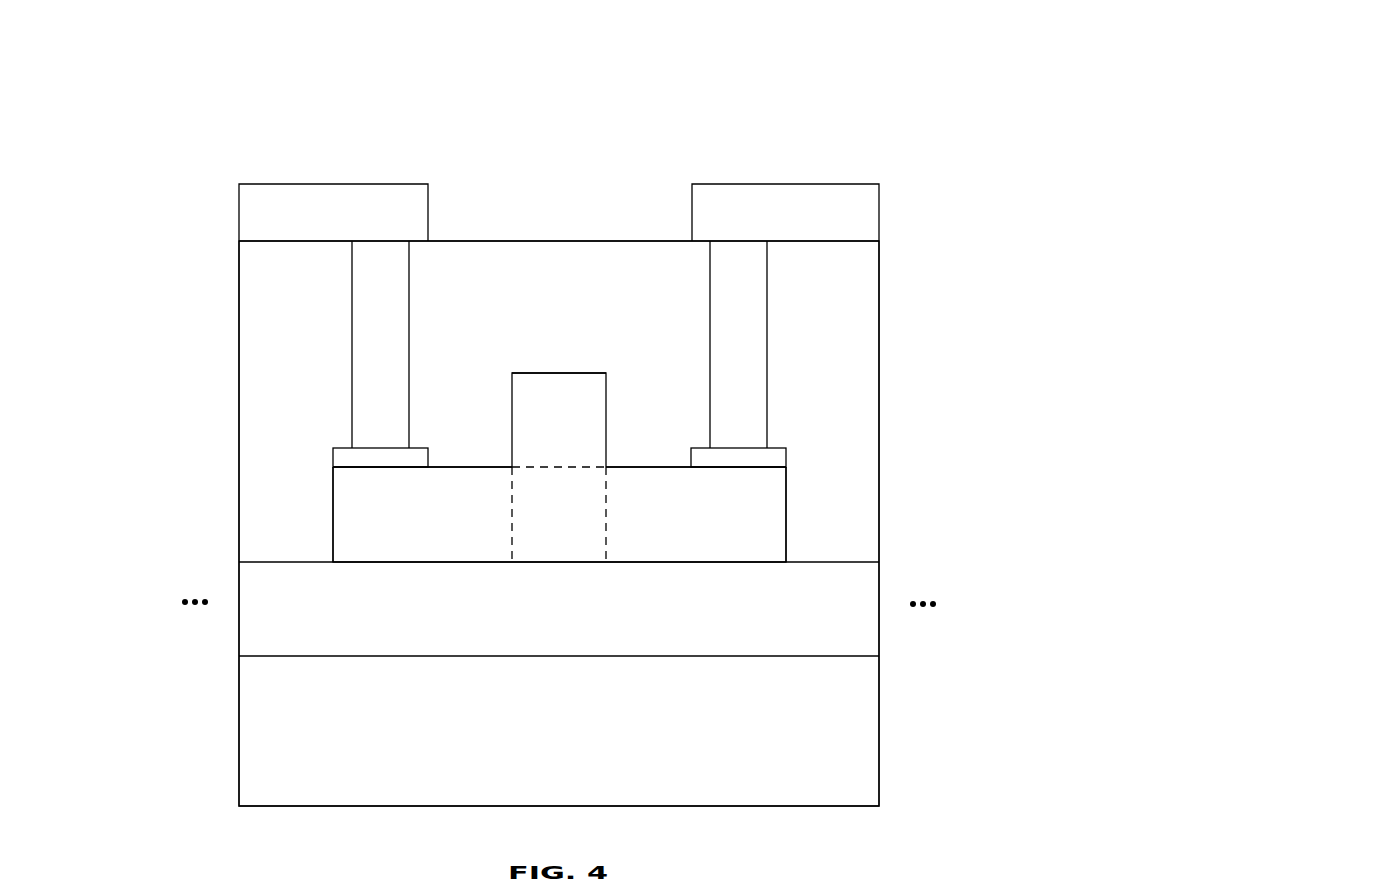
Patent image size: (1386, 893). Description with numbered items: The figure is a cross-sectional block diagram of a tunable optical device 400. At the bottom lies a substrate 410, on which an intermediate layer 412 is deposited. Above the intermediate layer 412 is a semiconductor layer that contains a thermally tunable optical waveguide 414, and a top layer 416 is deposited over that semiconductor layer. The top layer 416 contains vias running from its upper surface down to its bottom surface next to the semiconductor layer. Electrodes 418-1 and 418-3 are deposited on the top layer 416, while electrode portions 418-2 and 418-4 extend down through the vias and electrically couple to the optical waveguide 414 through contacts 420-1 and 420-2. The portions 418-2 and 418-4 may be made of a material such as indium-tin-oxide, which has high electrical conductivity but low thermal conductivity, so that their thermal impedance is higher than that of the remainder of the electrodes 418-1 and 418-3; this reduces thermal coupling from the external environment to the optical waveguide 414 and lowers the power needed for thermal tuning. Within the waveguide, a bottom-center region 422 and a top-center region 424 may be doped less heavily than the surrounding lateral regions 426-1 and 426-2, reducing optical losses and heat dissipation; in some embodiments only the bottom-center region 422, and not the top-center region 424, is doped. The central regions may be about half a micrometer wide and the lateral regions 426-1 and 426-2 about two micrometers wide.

The optical device 400 is at (913, 91).
The substrate 410 is at (543, 754).
The intermediate layer 412 is at (543, 631).
The optical waveguide 414 is at (1104, 370).
The top layer 416 is at (550, 328).
The electrode 418-1 is at (767, 204).
The electrode 418-2 is at (738, 355).
The electrode 418-3 is at (351, 204).
The electrode 418-4 is at (382, 355).
The contact 420-1 is at (738, 458).
The contact 420-2 is at (380, 458).
The bottom-center region 422 is at (562, 522).
The top-center region 424 is at (561, 415).
The lateral region 426-1 is at (683, 522).
The lateral region 426-2 is at (439, 522).